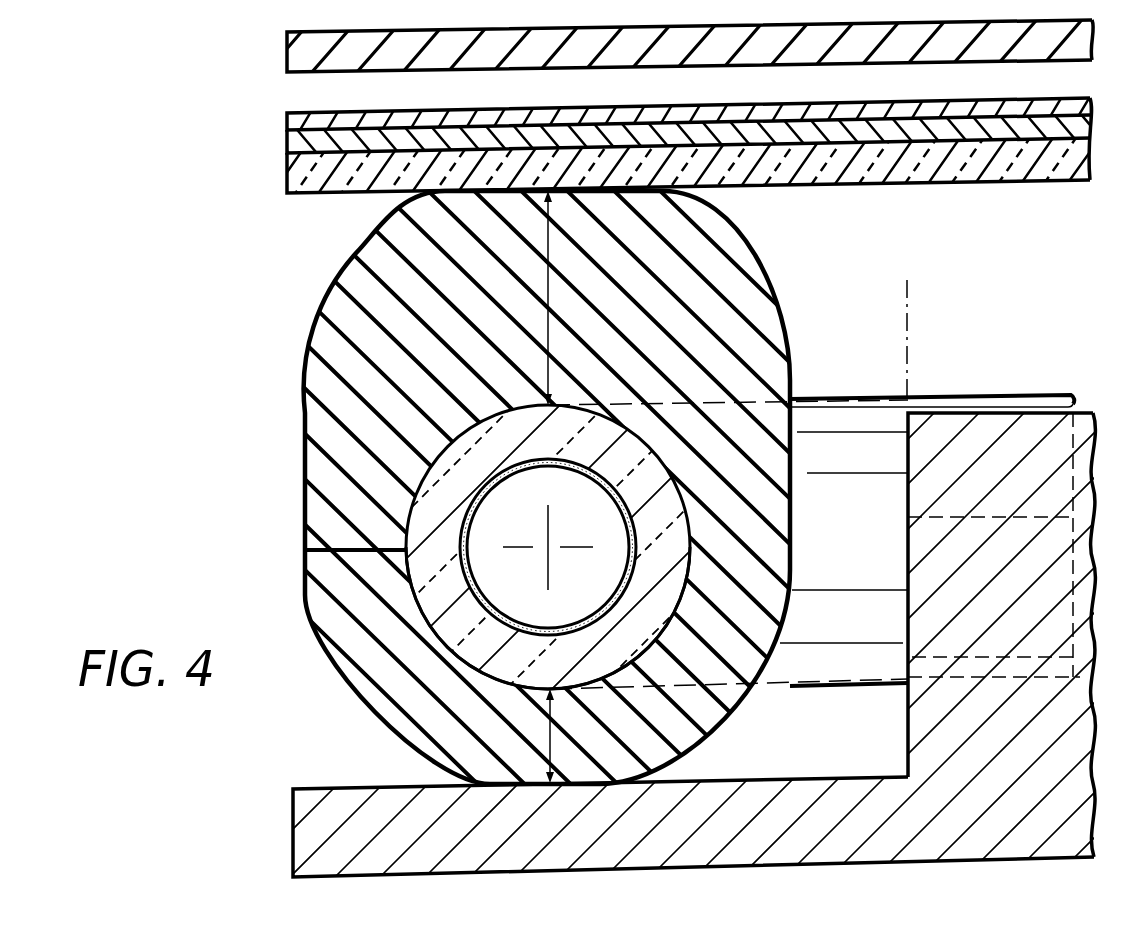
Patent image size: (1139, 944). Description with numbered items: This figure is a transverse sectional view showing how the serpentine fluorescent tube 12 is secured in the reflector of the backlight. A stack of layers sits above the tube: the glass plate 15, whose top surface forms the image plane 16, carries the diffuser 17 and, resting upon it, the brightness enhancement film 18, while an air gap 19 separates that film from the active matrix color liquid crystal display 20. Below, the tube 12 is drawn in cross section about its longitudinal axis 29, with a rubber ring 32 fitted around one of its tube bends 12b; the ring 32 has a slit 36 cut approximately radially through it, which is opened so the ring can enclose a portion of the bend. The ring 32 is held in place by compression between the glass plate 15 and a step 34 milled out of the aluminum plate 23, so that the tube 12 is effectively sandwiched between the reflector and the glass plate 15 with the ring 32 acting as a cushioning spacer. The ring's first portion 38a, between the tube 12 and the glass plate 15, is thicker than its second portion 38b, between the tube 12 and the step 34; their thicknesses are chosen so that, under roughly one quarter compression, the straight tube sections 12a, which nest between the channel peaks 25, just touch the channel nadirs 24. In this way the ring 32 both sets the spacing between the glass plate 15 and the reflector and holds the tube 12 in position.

The active matrix color liquid crystal display (AMLCD) 20 is at (307, 55).
The air gap 19 is at (330, 95).
The brightness enhancement film (BEF) 18 is at (313, 123).
The diffuser 17 is at (302, 143).
The image plane 16 is at (648, 152).
The glass plate 15 is at (303, 173).
The rubber ring 32 is at (330, 380).
The slit 36 is at (346, 546).
The serpentine fluorescent tube 12 is at (437, 507).
The longitudinal axis 29 is at (545, 544).
The tube bend 12b is at (403, 588).
The tube section 12a is at (952, 408).
The channel peak 25 is at (990, 408).
The channel nadir 24 is at (957, 680).
The aluminum plate 23 is at (315, 797).
The step 34 is at (343, 770).
The first portion 38a is at (547, 297).
The second portion 38b is at (553, 745).